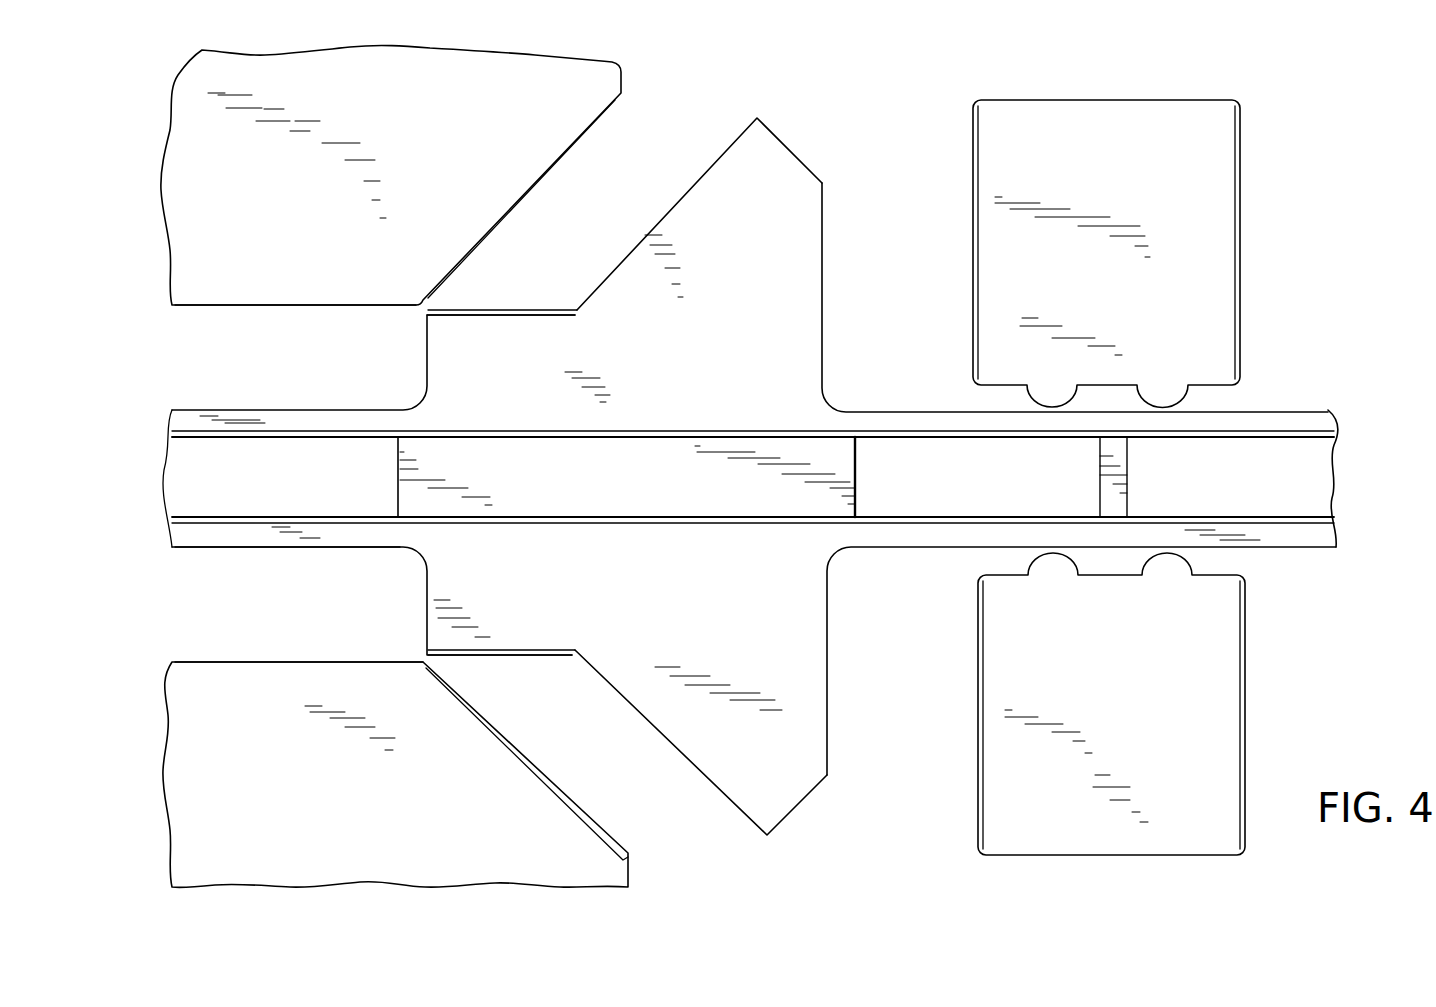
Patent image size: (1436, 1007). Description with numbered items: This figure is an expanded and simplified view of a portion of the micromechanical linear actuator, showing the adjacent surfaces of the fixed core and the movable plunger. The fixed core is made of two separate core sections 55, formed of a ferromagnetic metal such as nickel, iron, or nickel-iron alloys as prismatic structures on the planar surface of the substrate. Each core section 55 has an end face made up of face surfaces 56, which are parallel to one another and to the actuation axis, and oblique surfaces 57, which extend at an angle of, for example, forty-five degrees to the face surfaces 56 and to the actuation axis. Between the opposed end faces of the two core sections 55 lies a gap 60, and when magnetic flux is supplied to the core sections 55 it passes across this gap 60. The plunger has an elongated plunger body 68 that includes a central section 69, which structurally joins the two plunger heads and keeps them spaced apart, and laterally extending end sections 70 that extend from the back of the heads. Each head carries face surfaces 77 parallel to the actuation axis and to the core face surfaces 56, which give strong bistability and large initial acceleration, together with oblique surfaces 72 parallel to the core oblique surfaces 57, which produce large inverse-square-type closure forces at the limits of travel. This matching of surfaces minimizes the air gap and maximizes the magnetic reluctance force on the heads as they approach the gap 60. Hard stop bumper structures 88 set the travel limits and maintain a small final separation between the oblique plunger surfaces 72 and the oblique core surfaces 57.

The core sections 55 is at (574, 62).
The face surfaces 56 is at (263, 306).
The oblique surfaces 57 is at (598, 122).
The gap 60 is at (308, 373).
The plunger body 68 is at (906, 421).
The central section 69 is at (268, 549).
The end sections 70 is at (1253, 411).
The oblique surfaces 72 is at (716, 158).
The face surfaces 77 is at (515, 308).
The hard stop bumper structures 88 is at (1240, 179).